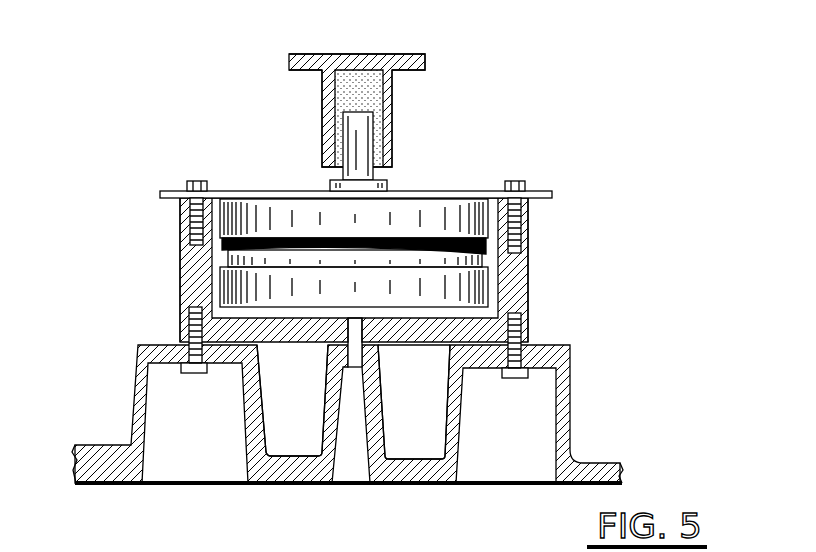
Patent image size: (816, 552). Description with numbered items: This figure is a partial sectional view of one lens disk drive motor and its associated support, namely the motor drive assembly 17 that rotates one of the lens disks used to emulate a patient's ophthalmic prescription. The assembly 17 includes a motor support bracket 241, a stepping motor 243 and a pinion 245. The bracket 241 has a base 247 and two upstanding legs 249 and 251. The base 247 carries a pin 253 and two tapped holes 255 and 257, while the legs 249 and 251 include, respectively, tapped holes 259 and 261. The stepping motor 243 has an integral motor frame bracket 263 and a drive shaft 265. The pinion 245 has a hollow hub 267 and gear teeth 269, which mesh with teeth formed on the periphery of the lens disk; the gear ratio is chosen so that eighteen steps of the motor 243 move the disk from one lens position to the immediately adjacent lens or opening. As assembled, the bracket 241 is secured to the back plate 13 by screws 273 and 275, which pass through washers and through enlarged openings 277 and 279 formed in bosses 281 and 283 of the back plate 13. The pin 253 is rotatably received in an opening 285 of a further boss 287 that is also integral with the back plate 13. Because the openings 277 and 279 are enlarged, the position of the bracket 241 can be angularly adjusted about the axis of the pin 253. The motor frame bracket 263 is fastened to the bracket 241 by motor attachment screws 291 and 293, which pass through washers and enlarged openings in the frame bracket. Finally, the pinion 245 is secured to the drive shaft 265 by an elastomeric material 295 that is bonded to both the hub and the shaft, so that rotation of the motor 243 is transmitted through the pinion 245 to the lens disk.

The back plate 13 is at (602, 462).
The motor drive assembly 17 is at (641, 231).
The motor support bracket 241 is at (534, 272).
The stepping motor 243 is at (375, 230).
The pinion 245 is at (310, 48).
The base 247 is at (402, 333).
The upstanding leg 249 is at (181, 258).
The upstanding leg 251 is at (528, 300).
The pin 253 is at (340, 345).
The tapped hole 255 is at (188, 318).
The tapped hole 257 is at (524, 330).
The tapped hole 259 is at (190, 218).
The tapped hole 261 is at (528, 228).
The motor frame bracket 263 is at (412, 192).
The drive shaft 265 is at (360, 147).
The hollow hub 267 is at (392, 114).
The gear teeth 269 is at (425, 62).
The screw 273 is at (207, 374).
The screw 275 is at (517, 379).
The enlarged opening 277 is at (185, 364).
The enlarged opening 279 is at (490, 372).
The boss 281 is at (136, 400).
The boss 283 is at (572, 400).
The opening 285 is at (326, 352).
The boss 287 is at (383, 437).
The motor attachment screw 291 is at (197, 181).
The motor attachment screw 293 is at (518, 181).
The elastomeric material 295 is at (362, 70).